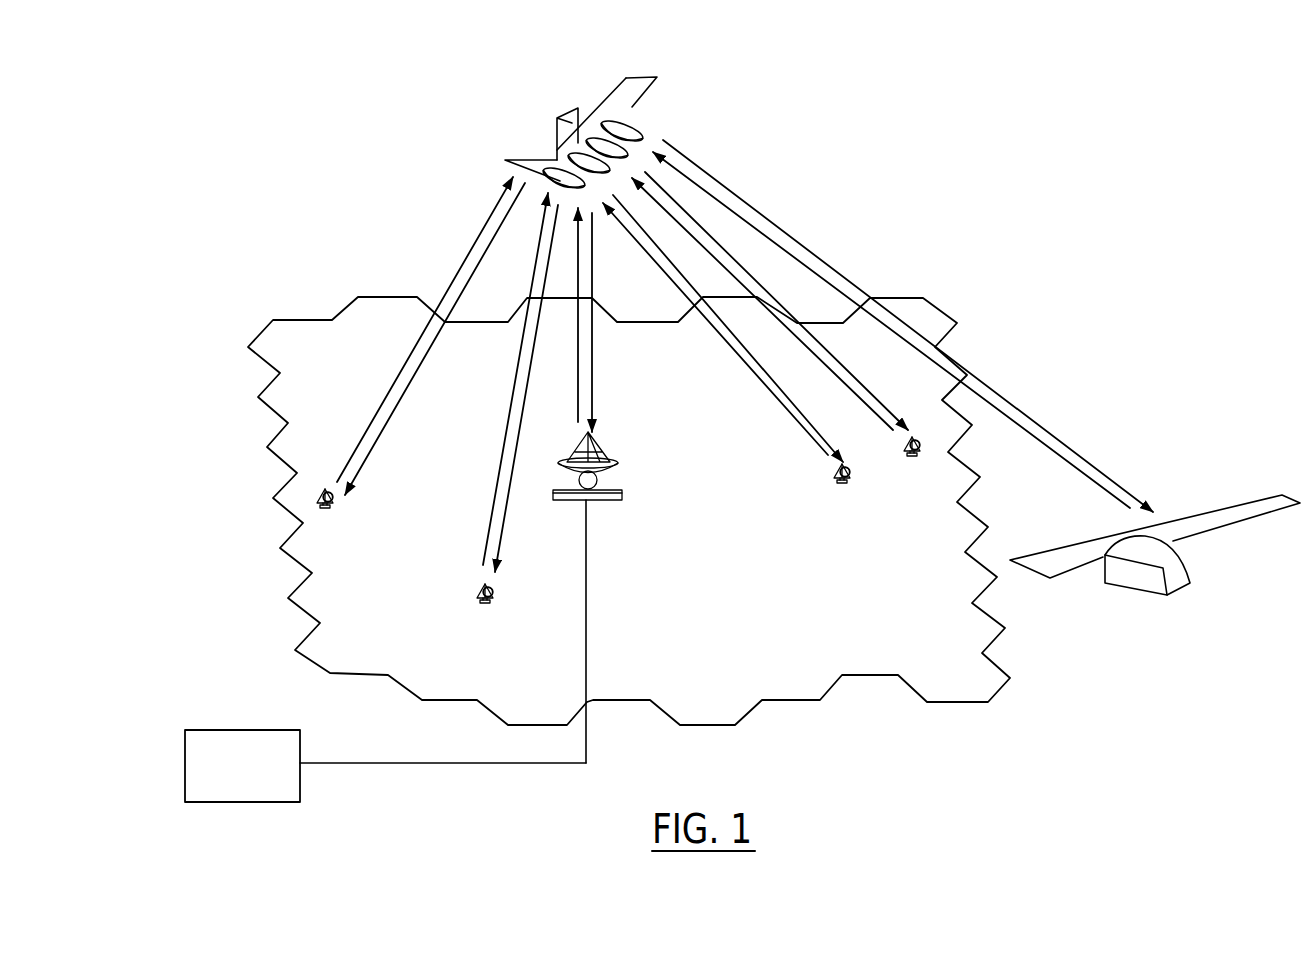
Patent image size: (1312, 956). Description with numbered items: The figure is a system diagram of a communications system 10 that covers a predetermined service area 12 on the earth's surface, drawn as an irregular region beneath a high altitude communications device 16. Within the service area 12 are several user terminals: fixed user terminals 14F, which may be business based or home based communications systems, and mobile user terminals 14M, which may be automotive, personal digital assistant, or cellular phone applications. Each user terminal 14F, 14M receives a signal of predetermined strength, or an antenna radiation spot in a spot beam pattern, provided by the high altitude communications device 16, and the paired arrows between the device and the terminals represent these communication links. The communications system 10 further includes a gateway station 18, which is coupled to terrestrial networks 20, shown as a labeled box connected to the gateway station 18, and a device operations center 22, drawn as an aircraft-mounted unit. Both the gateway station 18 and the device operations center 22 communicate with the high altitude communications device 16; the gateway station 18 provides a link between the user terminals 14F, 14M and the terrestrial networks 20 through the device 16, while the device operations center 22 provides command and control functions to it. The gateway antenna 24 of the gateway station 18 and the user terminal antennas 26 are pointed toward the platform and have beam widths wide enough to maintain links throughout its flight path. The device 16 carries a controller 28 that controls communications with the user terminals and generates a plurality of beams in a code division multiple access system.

The communications system 10 is at (342, 117).
The service area 12 is at (317, 320).
The fixed user terminals 14F is at (317, 500).
The mobile user terminals 14M is at (835, 482).
The high altitude communications device 16 is at (637, 107).
The gateway station 18 is at (592, 497).
The terrestrial networks 20 is at (257, 802).
The device operations center 22 is at (1185, 577).
The gateway antenna 24 is at (608, 460).
The user terminal antennas 26 is at (318, 490).
The controller 28 is at (557, 120).